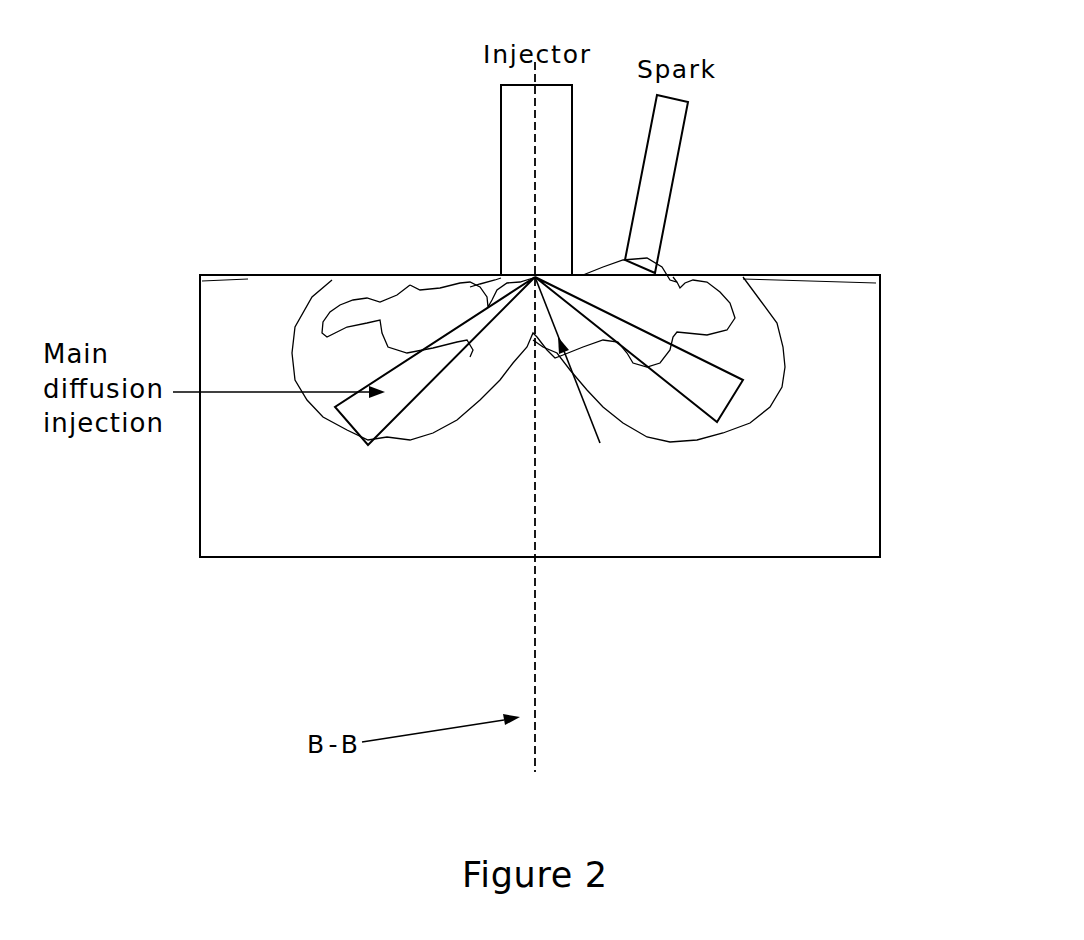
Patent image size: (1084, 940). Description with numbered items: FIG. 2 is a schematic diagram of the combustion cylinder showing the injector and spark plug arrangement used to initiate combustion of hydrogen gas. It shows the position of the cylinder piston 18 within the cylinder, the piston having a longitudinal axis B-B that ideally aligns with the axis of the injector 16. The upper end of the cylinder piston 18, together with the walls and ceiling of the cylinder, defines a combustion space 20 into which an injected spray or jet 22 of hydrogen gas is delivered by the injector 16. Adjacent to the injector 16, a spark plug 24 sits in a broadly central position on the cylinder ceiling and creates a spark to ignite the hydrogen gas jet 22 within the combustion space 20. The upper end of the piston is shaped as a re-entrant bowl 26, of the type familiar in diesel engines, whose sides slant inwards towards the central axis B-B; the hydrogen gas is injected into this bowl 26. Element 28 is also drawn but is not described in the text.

The injector 16 is at (479, 212).
The cylinder piston 18 is at (235, 337).
The combustion space 20 is at (762, 342).
The injected spray or jet of hydrogen gas 22 is at (438, 405).
The spark plug 24 is at (665, 182).
The re-entrant bowl 26 is at (297, 420).
The ignitable mixture region 28 is at (440, 281).